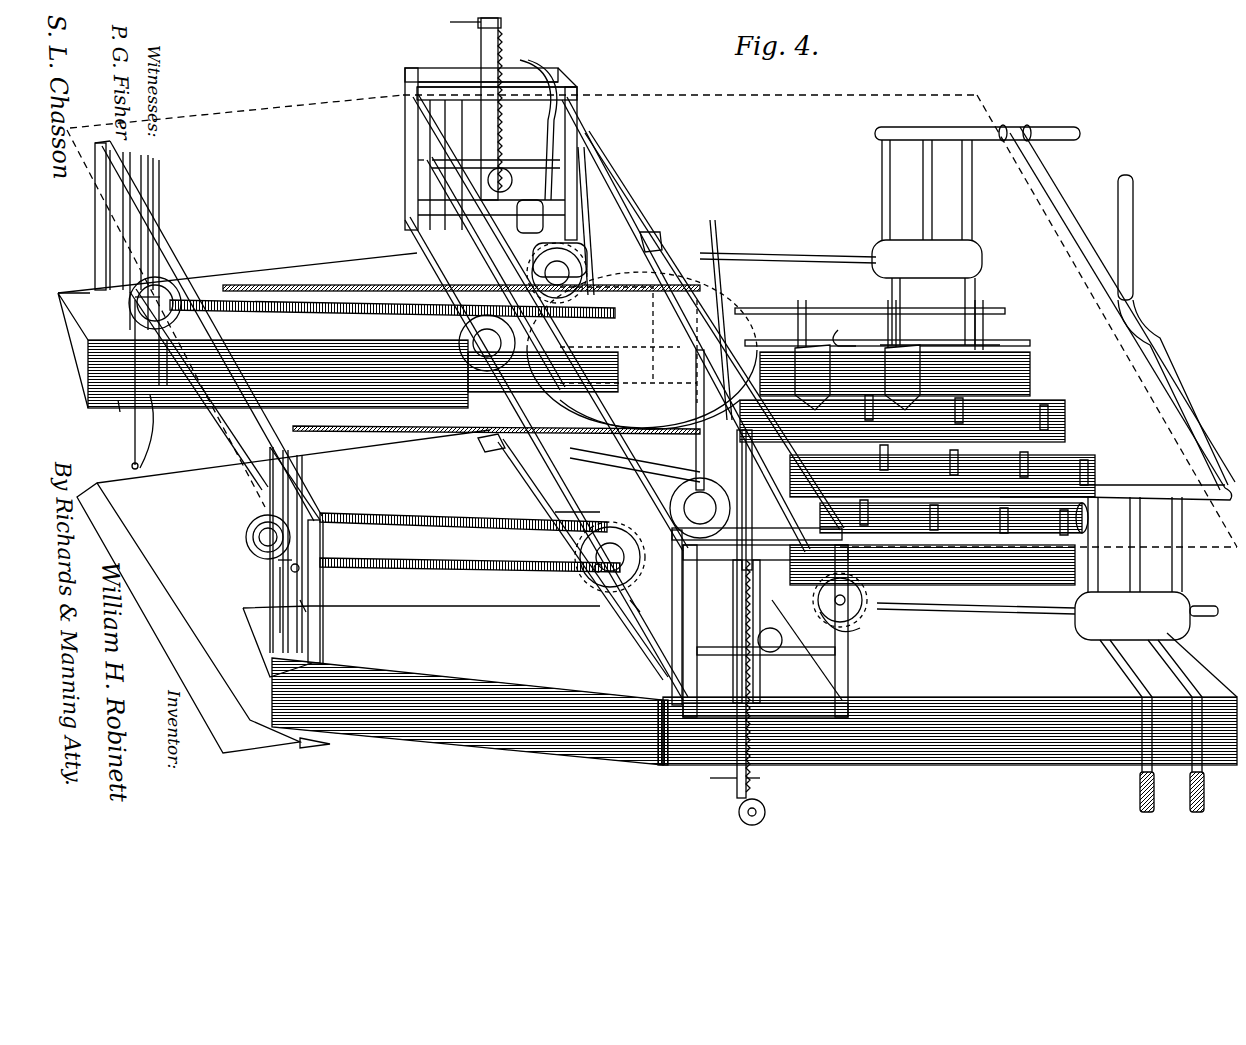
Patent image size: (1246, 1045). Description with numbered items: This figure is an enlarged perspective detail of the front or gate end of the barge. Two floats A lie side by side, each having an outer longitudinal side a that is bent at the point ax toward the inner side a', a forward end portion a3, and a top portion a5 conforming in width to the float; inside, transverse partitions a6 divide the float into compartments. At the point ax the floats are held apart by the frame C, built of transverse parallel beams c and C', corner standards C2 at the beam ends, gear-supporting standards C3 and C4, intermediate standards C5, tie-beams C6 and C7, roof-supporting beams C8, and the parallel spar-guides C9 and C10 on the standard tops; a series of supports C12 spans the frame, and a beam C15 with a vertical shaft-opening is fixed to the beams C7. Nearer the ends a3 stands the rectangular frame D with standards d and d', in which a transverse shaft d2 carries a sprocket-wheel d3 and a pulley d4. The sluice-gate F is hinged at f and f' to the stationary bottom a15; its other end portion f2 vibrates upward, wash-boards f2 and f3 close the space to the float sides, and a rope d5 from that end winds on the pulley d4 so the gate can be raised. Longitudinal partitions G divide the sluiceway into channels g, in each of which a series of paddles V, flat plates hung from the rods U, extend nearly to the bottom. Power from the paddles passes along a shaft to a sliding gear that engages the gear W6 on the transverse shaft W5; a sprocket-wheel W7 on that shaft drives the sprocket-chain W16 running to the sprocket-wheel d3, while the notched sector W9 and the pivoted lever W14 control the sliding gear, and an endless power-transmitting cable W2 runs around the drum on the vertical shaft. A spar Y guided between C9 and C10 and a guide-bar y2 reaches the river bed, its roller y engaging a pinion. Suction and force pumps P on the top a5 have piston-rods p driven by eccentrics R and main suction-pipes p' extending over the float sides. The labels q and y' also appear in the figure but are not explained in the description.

The float A is at (355, 520).
The outer longitudinal side of float a is at (647, 502).
The inner longitudinal side of float a' is at (106, 418).
The forward end portion of float a3 is at (182, 485).
The top portion of float a5 is at (353, 486).
The transverse partition a6 is at (1113, 538).
The deflection point of float side ax is at (652, 768).
The stationary bottom a15 is at (583, 559).
The frame-work C is at (483, 167).
The parallel beam of frame C c is at (503, 377).
The parallel beam of frame C C' is at (705, 631).
The corner standard C2 is at (418, 160).
The gear-supporting standard C3 is at (470, 272).
The gear-supporting standard C4 is at (570, 512).
The standard C5 is at (418, 216).
The tie-beam C6 is at (418, 185).
The tie-beam C7 is at (603, 173).
The roof-supporting beam C8 is at (412, 137).
The spar-guide C9 is at (432, 68).
The spar-guide C10 is at (570, 92).
The support C12 is at (712, 645).
The beam C15 is at (612, 365).
The rectangular frame D is at (209, 402).
The vertical standard of frame D d is at (289, 625).
The vertical standard of frame D d' is at (258, 574).
The transverse shaft d2 is at (293, 570).
The sprocket-wheel d3 is at (130, 313).
The pulley d4 is at (135, 297).
The rope d5 is at (134, 440).
The sluice-gate F is at (171, 521).
The hinge of sluice-gate f is at (504, 505).
The hinge of sluice-gate f' is at (488, 455).
The vibrating end portion of sluice-gate f2 is at (186, 594).
The wash-board f3 is at (325, 752).
The longitudinal partition G is at (1062, 412).
The channel g is at (937, 468).
The suction and force pump P is at (1031, 382).
The piston-rod p is at (962, 431).
The main suction-pipe p' is at (1122, 469).
The bracket q is at (492, 432).
The eccentric R is at (656, 233).
The rod U is at (882, 330).
The paddle V is at (857, 377).
The power-transmitting cable W2 is at (262, 284).
The transverse shaft W5 is at (630, 607).
The gear W6 is at (596, 569).
The sprocket-wheel W7 is at (567, 365).
The notched sector W9 is at (565, 118).
The lever W14 is at (600, 192).
The sprocket-chain W16 is at (256, 309).
The spar Y is at (591, 404).
The roller y is at (632, 422).
The saw guide y' is at (766, 779).
The guide-bar y2 is at (737, 683).